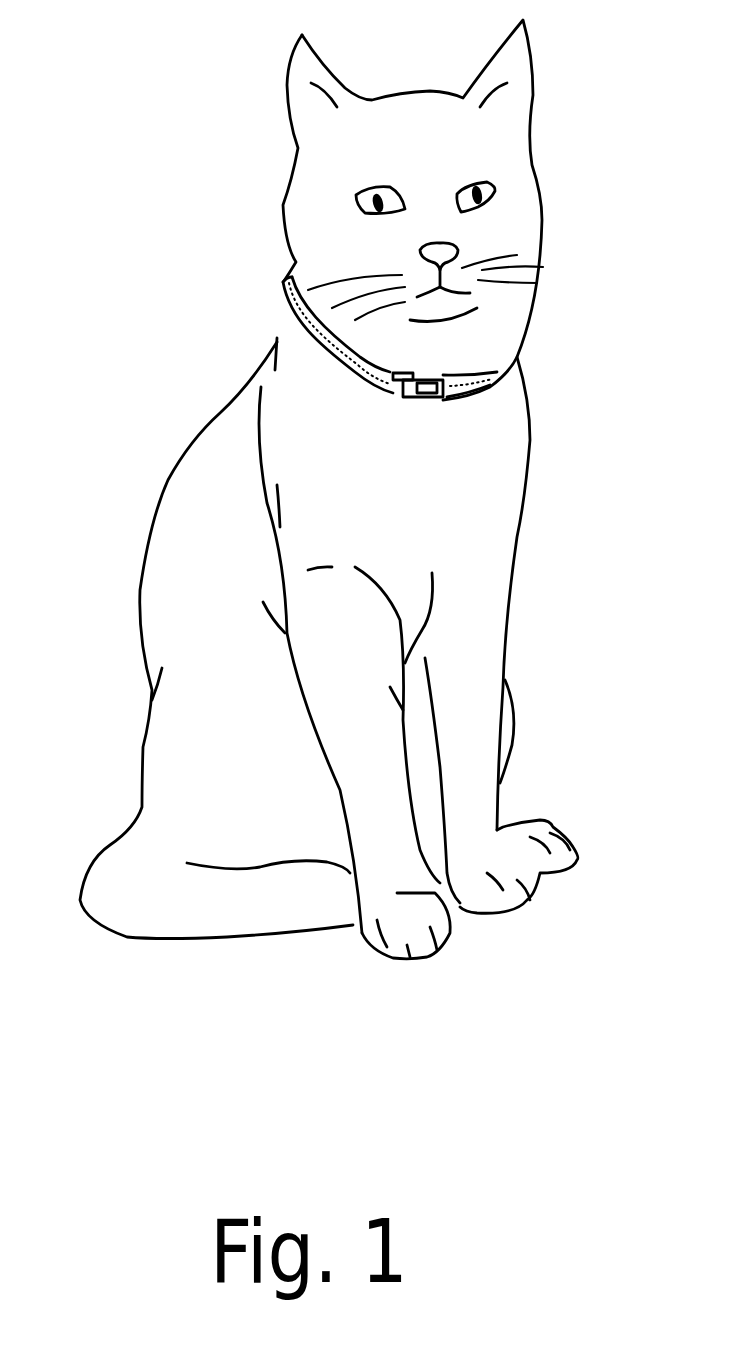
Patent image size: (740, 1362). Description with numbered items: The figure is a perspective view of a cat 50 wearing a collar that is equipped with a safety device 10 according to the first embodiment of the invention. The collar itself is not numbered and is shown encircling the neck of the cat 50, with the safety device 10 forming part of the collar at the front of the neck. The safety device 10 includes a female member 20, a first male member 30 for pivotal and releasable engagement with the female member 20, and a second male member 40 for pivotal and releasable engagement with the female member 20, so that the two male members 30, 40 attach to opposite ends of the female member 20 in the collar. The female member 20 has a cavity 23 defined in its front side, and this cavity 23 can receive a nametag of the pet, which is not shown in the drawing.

The safety device 10 is at (386, 399).
The female member 20 is at (527, 462).
The cavity 23 is at (440, 400).
The first male member 30 is at (447, 377).
The second male member 40 is at (293, 331).
The cat 50 is at (195, 473).